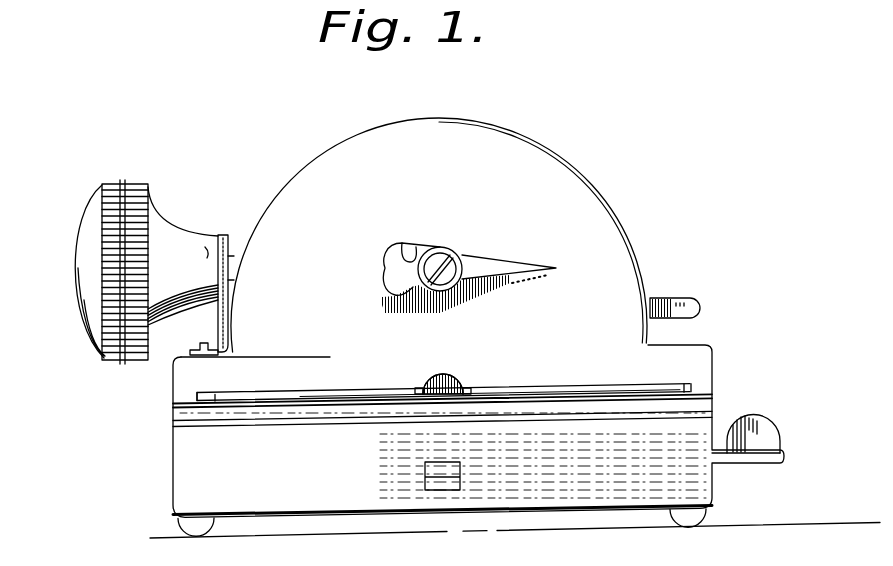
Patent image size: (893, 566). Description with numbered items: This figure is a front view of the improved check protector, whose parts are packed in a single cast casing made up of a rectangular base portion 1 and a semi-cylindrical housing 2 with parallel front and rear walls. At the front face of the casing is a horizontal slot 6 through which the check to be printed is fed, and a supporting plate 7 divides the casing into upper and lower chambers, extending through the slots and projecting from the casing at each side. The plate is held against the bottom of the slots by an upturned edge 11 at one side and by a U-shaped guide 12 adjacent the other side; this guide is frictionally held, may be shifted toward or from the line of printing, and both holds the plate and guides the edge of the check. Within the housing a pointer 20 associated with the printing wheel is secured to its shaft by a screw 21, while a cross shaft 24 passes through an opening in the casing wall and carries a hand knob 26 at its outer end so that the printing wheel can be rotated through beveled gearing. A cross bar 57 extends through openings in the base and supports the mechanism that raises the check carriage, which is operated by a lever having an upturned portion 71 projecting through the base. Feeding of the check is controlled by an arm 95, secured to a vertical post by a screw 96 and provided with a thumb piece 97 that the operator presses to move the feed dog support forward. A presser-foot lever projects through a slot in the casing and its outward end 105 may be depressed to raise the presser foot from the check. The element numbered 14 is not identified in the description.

The rectangular base portion 1 is at (478, 440).
The semi-cylindrical housing 2 is at (580, 183).
The horizontal slot 6 is at (549, 388).
The supporting plate 7 is at (616, 392).
The upturned edge 11 is at (692, 388).
The U-shaped guide 12 is at (264, 390).
The indicator key 14 is at (447, 372).
The pointer 20 is at (475, 263).
The screw 21 is at (430, 263).
The cross shaft 24 is at (232, 262).
The hand knob 26 is at (127, 192).
The cross bar 57 is at (447, 490).
The upturned portion 71 is at (750, 425).
The arm 95 is at (207, 352).
The screw 96 is at (200, 343).
The thumb piece 97 is at (223, 320).
The outward end of lever 105 is at (697, 282).